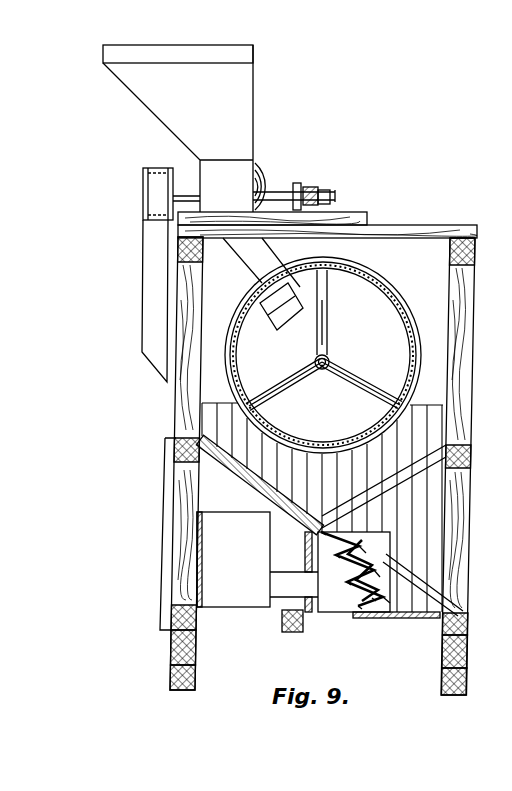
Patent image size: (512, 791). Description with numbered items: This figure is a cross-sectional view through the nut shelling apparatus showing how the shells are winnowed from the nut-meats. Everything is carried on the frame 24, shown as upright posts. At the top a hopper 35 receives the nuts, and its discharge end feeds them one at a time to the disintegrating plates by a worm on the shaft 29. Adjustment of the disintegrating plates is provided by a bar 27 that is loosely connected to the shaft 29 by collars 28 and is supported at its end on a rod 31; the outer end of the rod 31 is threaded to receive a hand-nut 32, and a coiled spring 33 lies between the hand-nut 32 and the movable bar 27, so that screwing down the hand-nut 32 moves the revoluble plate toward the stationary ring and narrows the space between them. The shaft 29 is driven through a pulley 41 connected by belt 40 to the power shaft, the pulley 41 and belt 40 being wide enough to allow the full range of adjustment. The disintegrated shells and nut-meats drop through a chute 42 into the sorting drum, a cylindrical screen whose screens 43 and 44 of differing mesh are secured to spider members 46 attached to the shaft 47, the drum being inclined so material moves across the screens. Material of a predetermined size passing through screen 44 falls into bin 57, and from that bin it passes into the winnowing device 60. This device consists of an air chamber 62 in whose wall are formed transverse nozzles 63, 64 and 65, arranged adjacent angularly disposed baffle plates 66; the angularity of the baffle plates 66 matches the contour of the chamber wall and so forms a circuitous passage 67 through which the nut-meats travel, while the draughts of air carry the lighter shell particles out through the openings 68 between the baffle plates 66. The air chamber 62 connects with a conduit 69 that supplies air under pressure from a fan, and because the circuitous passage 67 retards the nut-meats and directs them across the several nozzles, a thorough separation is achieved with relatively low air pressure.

The hopper 35 is at (240, 80).
The pulley 41 is at (143, 203).
The belt 40 is at (157, 244).
The rod 31 is at (292, 188).
The shaft 29 is at (337, 192).
The collar 28 is at (302, 185).
The coiled spring 33 is at (310, 188).
The hand-nut 32 is at (323, 191).
The bar 27 is at (312, 206).
The frame 24 is at (192, 410).
The chute 42 is at (255, 271).
The screen 43 is at (380, 285).
The spider member 46 is at (352, 277).
The screen 44 is at (392, 303).
The shaft 47 is at (330, 362).
The bin 57 is at (262, 480).
The conduit 69 is at (237, 587).
The winnowing device 60 is at (318, 602).
The nozzle 65 is at (358, 590).
The air chamber 62 is at (295, 633).
The nozzle 63 is at (347, 540).
The nozzle 64 is at (352, 568).
The baffle plate 66 is at (382, 578).
The opening 68 is at (378, 592).
The circuitous passage 67 is at (362, 546).